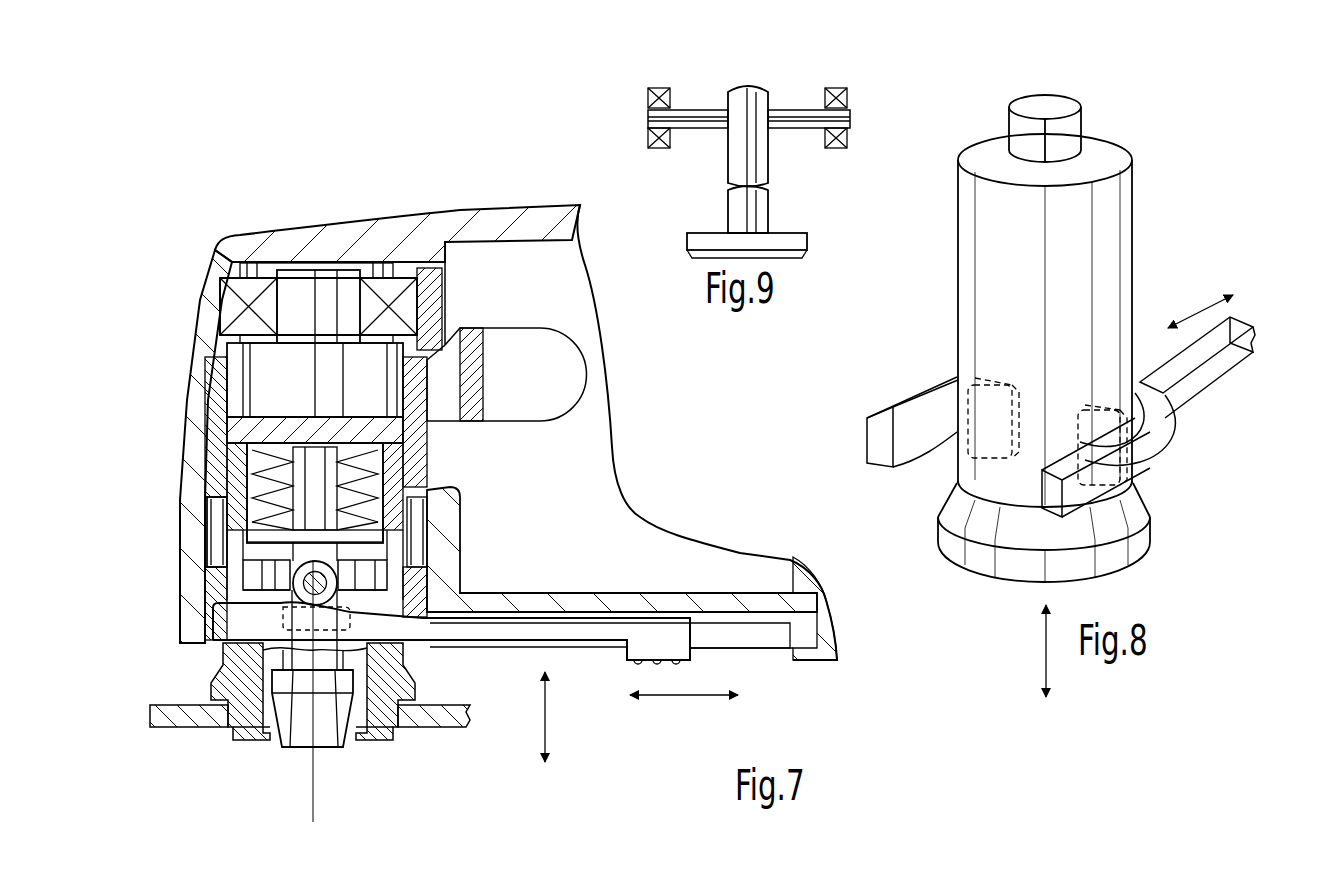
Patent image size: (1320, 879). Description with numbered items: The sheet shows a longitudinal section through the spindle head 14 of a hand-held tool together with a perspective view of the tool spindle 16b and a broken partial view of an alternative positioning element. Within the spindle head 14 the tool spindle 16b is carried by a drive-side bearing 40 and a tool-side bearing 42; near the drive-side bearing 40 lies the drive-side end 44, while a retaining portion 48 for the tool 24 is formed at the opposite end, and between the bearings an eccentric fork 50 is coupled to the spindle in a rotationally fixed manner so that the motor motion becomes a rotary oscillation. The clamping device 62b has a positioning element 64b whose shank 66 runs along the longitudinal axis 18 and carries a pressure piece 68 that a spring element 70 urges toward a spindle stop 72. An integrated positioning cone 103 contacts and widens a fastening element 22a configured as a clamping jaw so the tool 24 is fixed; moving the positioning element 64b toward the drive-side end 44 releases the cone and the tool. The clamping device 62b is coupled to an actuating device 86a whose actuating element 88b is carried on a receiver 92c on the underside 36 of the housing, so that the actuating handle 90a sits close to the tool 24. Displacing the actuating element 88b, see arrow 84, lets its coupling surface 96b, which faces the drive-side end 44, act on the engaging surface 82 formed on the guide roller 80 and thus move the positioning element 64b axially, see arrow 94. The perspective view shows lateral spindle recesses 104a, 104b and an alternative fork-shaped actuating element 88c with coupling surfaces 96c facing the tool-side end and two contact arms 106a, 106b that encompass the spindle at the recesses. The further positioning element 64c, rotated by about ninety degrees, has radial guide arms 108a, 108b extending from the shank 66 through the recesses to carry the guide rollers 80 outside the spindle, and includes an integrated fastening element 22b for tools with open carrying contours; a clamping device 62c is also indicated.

In FIG. 7, the spindle head 14 is at (228, 200).
In FIG. 7, the tool spindle 16b is at (405, 654).
In FIG. 8, the tool spindle 16b is at (1140, 220).
In FIG. 7, the longitudinal axis 18 is at (312, 778).
In FIG. 7, the fastening element 22a is at (258, 743).
In FIG. 9, the fastening element 22b is at (782, 240).
In FIG. 7, the tool 24 is at (233, 720).
In FIG. 7, the underside 36 is at (581, 665).
In FIG. 7, the drive-side bearing 40 is at (200, 300).
In FIG. 7, the tool-side bearing 42 is at (215, 522).
In FIG. 7, the drive-side end 44 is at (284, 265).
In FIG. 7, the retaining portion 48 is at (427, 690).
In FIG. 8, the retaining portion 48 is at (1003, 597).
In FIG. 7, the eccentric fork 50 is at (195, 400).
In FIG. 7, the clamping device 62b is at (560, 510).
In FIG. 8, the coupling unit 62c is at (1182, 272).
In FIG. 7, the positioning element 64b is at (323, 446).
In FIG. 9, the positioning element 64c is at (782, 86).
In FIG. 9, the shank 66 is at (736, 150).
In FIG. 7, the pressure piece 68 is at (268, 500).
In FIG. 7, the spring element 70 is at (235, 440).
In FIG. 7, the spindle stop 72 is at (357, 510).
In FIG. 7, the guide roller 80 is at (258, 560).
In FIG. 9, the guide roller 80 is at (642, 95).
In FIG. 7, the engaging surface 82 is at (450, 597).
In FIG. 7, the arrow 84 is at (683, 698).
In FIG. 8, the arrow 84 is at (1210, 300).
In FIG. 7, the actuating device 86a is at (538, 622).
In FIG. 7, the actuating element 88b is at (595, 625).
In FIG. 8, the actuating element 88c is at (1205, 365).
In FIG. 7, the actuating handle 90a is at (677, 645).
In FIG. 7, the receiver 92c is at (760, 637).
In FIG. 7, the arrow 94 is at (545, 712).
In FIG. 8, the arrow 94 is at (1044, 644).
In FIG. 7, the coupling surface 96b is at (243, 582).
In FIG. 8, the coupling surfaces 96c is at (937, 470).
In FIG. 7, the positioning cone 103 is at (327, 727).
In FIG. 7, the lateral spindle recess 104a is at (345, 585).
In FIG. 8, the lateral spindle recess 104a is at (1112, 440).
In FIG. 8, the lateral spindle recess 104b is at (1000, 410).
In FIG. 7, the contact arm 106a is at (240, 614).
In FIG. 8, the contact arm 106a is at (1150, 455).
In FIG. 8, the contact arm 106b is at (900, 405).
In FIG. 9, the guide arm 108a is at (699, 110).
In FIG. 9, the guide arm 108b is at (795, 128).